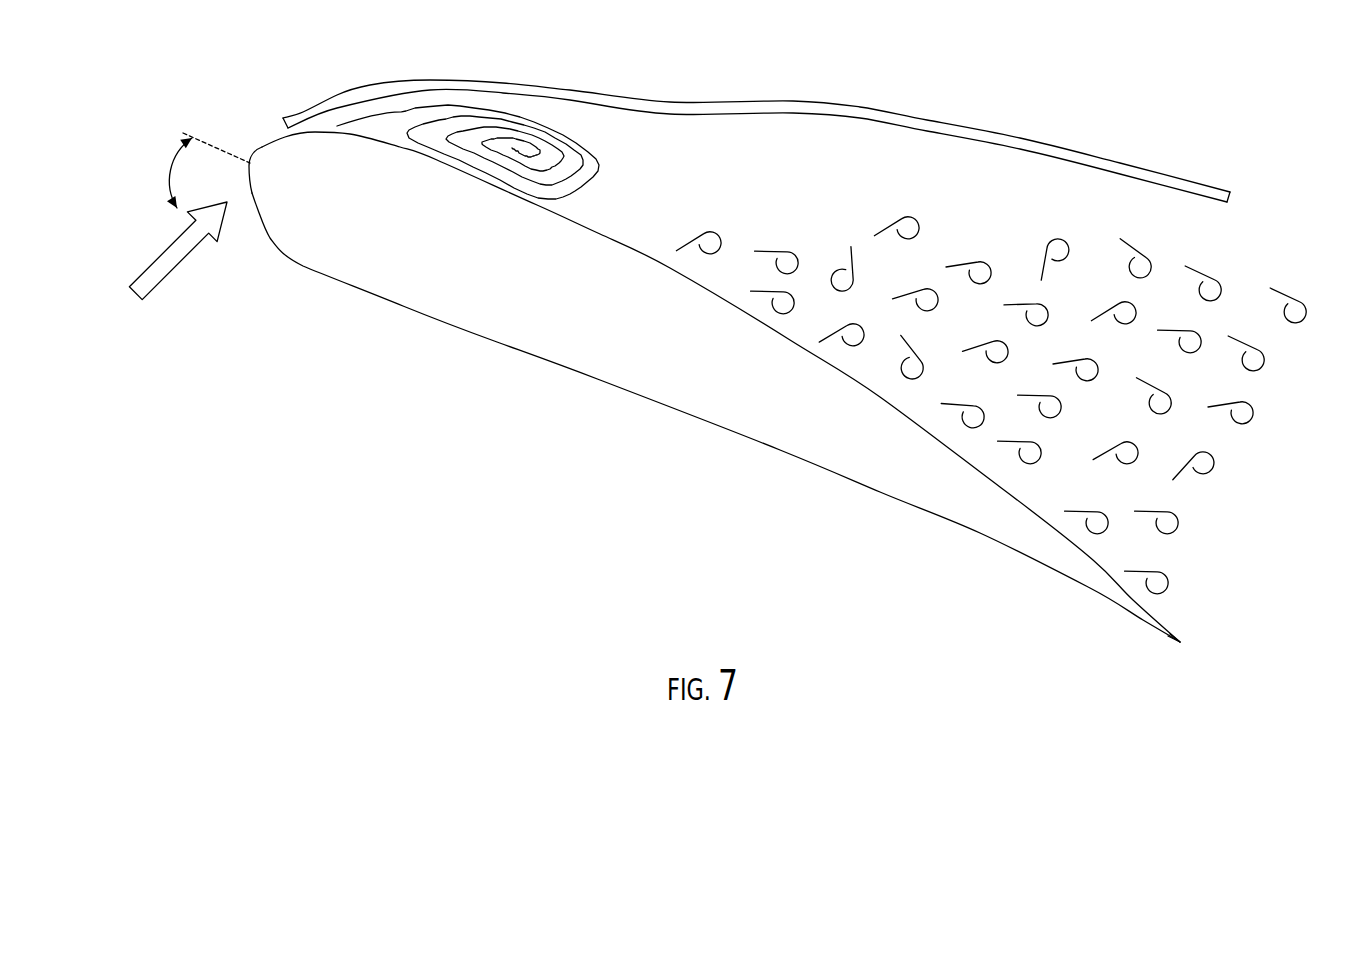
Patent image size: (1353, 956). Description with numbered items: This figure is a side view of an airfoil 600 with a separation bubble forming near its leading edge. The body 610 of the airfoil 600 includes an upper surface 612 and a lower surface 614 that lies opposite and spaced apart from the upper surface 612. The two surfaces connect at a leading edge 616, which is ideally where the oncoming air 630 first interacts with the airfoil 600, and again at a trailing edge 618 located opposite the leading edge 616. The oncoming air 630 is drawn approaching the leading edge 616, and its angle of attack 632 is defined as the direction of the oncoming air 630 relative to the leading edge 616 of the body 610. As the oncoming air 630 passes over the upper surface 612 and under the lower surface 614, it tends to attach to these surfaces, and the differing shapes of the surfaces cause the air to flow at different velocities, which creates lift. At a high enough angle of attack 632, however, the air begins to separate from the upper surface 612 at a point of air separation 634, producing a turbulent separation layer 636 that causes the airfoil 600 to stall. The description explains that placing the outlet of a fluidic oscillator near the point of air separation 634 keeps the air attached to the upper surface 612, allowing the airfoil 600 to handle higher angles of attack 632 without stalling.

The airfoil 600 is at (613, 453).
The body 610 is at (727, 432).
The upper surface 612 is at (597, 242).
The lower surface 614 is at (497, 342).
The leading edge 616 is at (250, 165).
The trailing edge 618 is at (1180, 642).
The oncoming air 630 is at (163, 277).
The angle of attack 632 is at (170, 172).
The point of air separation 634 is at (283, 123).
The turbulent separation layer 636 is at (590, 138).